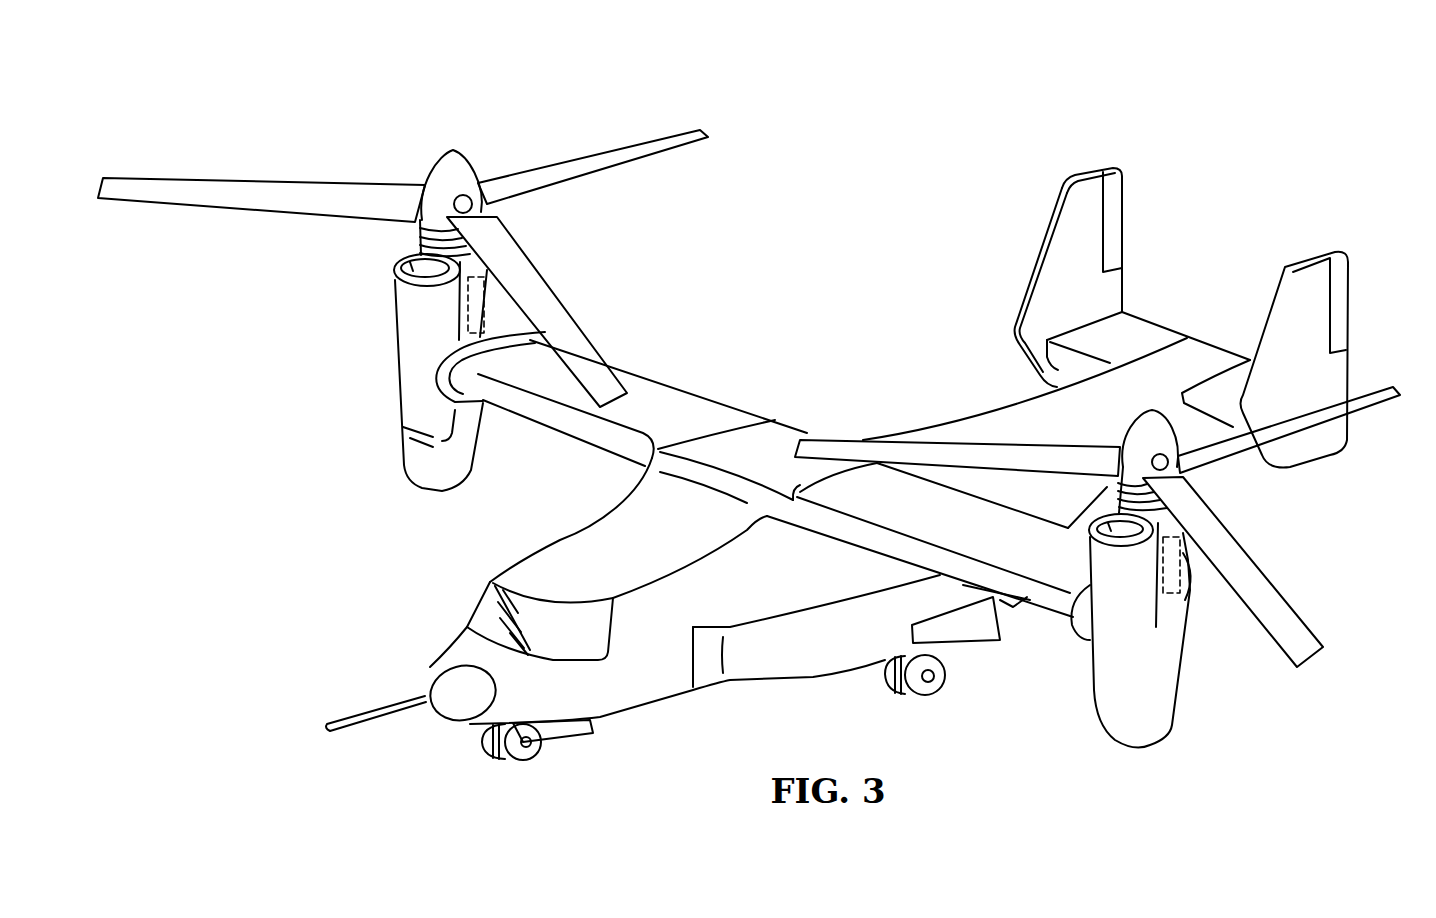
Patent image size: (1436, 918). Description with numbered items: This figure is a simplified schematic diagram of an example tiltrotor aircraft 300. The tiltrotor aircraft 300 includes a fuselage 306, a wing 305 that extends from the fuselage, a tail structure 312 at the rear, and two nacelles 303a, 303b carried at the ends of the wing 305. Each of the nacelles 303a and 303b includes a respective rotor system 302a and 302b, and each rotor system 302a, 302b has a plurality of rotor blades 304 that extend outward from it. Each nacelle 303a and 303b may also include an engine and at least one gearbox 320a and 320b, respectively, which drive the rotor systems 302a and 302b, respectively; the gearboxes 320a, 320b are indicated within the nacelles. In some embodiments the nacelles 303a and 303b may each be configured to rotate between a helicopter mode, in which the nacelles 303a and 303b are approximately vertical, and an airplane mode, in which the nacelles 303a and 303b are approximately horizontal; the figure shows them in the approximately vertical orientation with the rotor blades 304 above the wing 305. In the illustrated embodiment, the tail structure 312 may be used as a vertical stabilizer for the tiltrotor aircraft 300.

The tiltrotor aircraft 300 is at (620, 103).
The rotor system 302a is at (436, 169).
The rotor system 302b is at (1130, 430).
The nacelle 303a is at (392, 375).
The nacelle 303b is at (1182, 688).
The rotor blades 304 is at (597, 173).
The wing 305 is at (694, 391).
The fuselage 306 is at (648, 707).
The tail structure 312 is at (1157, 322).
The gearbox 320a is at (467, 320).
The gearbox 320b is at (1168, 593).